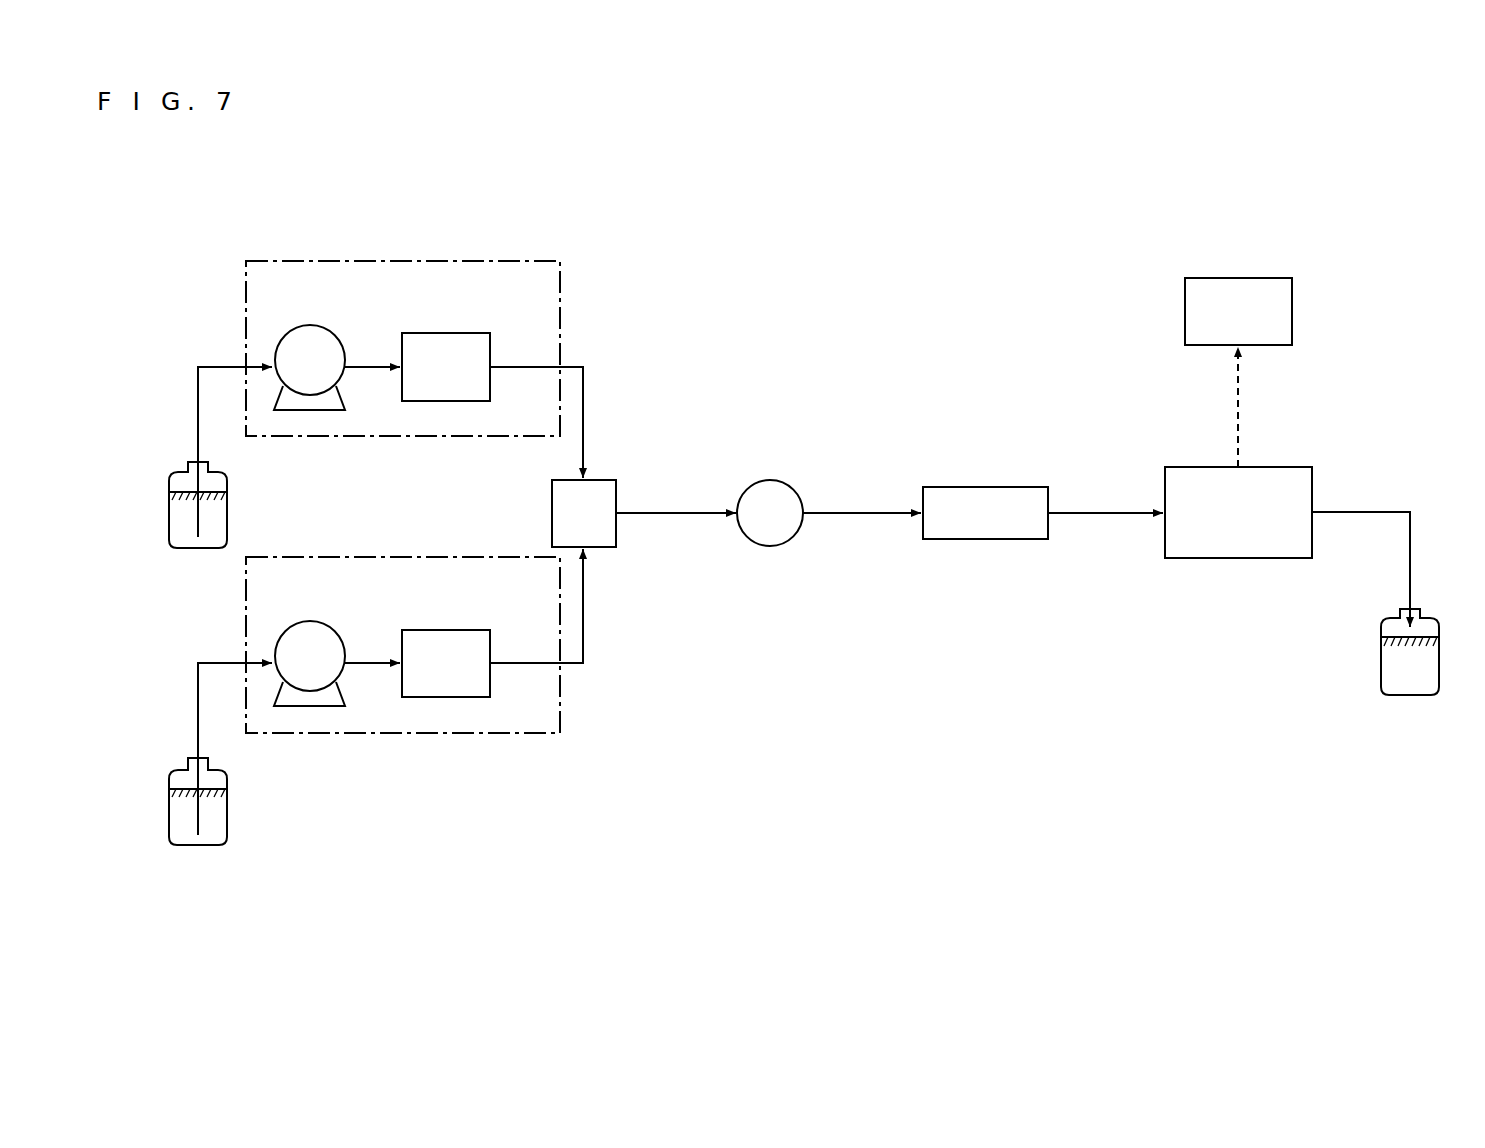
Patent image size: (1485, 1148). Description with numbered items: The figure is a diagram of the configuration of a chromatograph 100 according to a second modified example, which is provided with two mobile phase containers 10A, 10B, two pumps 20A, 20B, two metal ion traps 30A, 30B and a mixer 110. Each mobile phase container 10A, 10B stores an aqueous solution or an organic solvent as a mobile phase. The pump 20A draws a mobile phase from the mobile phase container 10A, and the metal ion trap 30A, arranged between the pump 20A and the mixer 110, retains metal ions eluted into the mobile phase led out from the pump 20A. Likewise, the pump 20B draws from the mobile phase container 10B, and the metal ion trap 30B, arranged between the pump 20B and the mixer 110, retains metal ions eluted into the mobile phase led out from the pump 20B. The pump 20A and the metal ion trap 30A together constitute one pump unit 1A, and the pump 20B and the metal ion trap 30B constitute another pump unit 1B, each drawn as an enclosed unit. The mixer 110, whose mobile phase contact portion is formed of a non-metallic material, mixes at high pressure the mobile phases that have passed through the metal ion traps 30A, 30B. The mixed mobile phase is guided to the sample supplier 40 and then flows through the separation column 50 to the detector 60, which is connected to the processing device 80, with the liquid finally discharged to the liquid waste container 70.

The pump unit 1A is at (406, 261).
The pump unit 1B is at (406, 557).
The mobile phase container 10A is at (200, 552).
The mobile phase container 10B is at (200, 848).
The pump 20A is at (310, 325).
The pump 20B is at (310, 621).
The metal ion trap 30A is at (446, 333).
The metal ion trap 30B is at (446, 630).
The mixer 110 is at (600, 478).
The sample supplier 40 is at (770, 480).
The separation column 50 is at (983, 487).
The detector 60 is at (1255, 467).
The liquid waste container 70 is at (1398, 697).
The processing device 80 is at (1238, 278).
The chromatograph 100 is at (1467, 202).